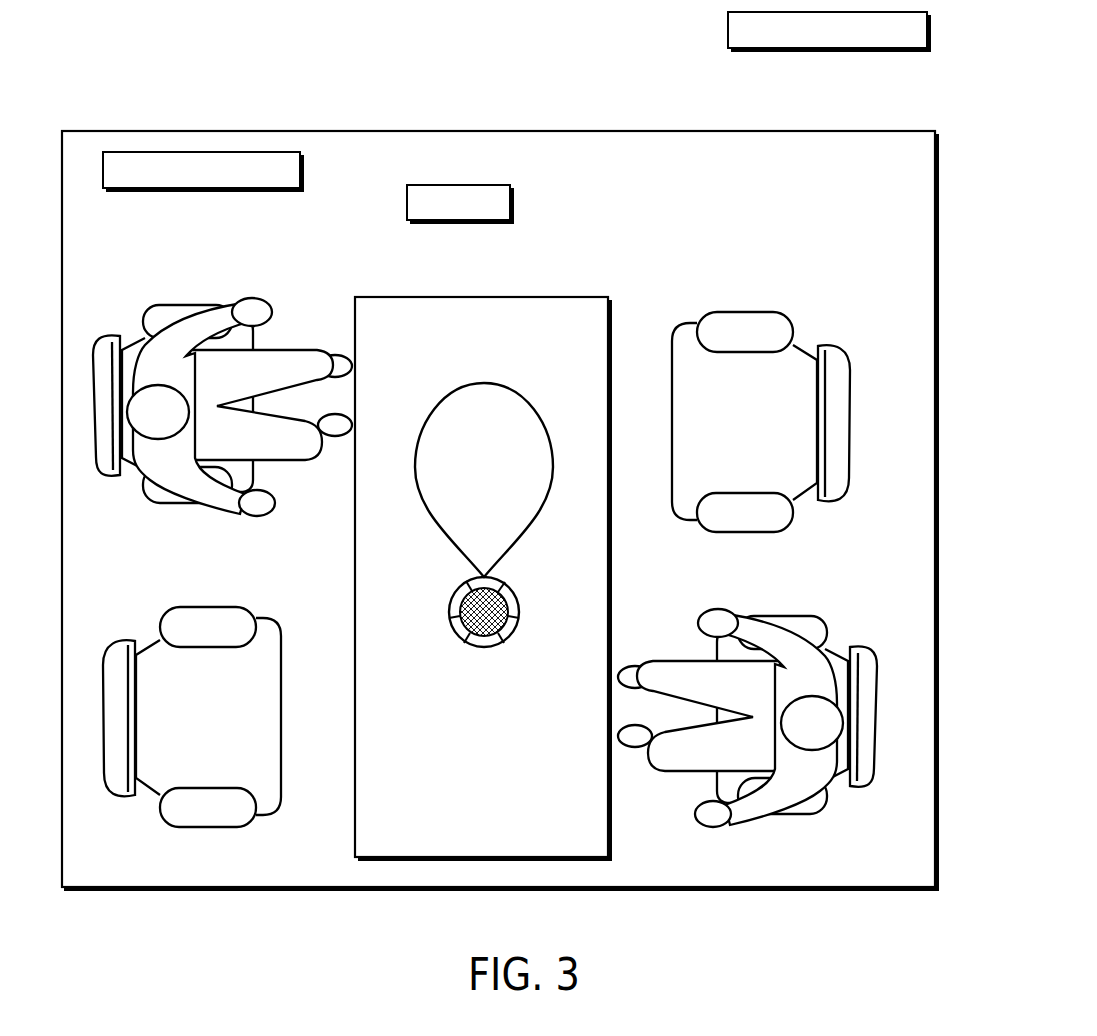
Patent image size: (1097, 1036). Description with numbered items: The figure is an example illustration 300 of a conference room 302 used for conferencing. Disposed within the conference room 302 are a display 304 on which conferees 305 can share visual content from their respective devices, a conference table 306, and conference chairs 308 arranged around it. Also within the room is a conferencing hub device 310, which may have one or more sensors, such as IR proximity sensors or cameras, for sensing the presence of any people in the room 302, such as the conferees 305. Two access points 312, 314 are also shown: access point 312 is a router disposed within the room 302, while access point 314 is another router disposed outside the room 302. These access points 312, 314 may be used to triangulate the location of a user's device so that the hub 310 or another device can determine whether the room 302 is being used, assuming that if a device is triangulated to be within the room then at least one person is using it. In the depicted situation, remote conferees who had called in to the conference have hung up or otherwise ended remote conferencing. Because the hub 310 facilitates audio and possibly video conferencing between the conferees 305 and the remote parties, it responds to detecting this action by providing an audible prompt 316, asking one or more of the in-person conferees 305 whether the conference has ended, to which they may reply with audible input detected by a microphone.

The example illustration 300 is at (143, 84).
The conference room 302 is at (833, 195).
The display 304 is at (458, 223).
The conferees 305 is at (203, 506).
The conference table 306 is at (612, 545).
The conference chairs 308 is at (748, 534).
The conferencing hub device 310 is at (479, 648).
The access point 312 is at (203, 191).
The access point 314 is at (827, 51).
The audible prompt 316 is at (452, 392).